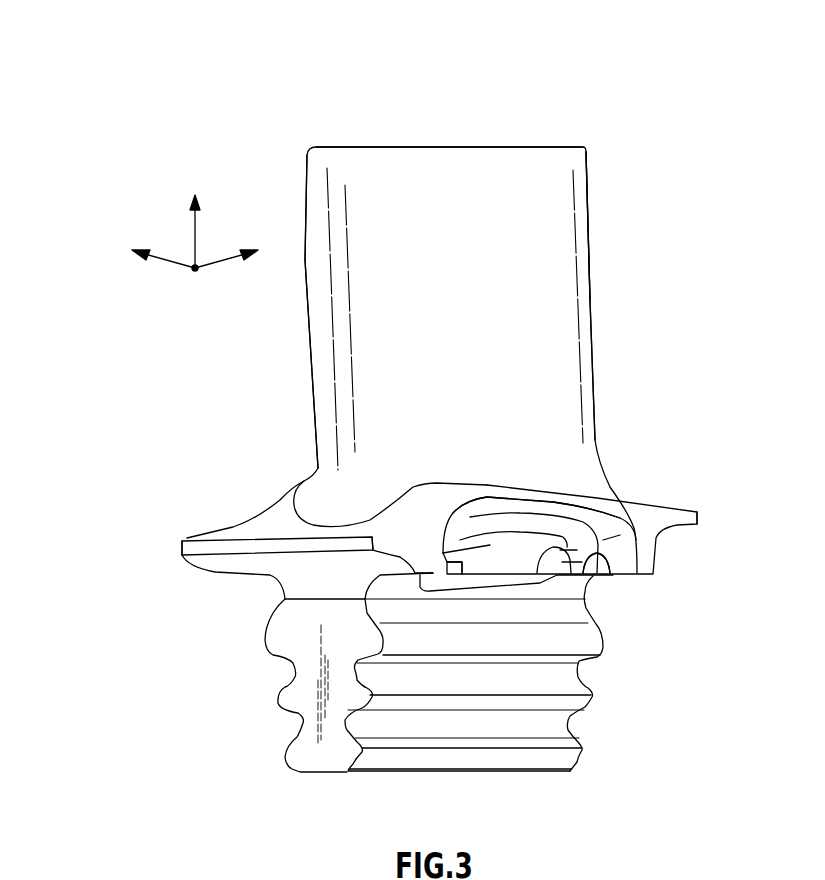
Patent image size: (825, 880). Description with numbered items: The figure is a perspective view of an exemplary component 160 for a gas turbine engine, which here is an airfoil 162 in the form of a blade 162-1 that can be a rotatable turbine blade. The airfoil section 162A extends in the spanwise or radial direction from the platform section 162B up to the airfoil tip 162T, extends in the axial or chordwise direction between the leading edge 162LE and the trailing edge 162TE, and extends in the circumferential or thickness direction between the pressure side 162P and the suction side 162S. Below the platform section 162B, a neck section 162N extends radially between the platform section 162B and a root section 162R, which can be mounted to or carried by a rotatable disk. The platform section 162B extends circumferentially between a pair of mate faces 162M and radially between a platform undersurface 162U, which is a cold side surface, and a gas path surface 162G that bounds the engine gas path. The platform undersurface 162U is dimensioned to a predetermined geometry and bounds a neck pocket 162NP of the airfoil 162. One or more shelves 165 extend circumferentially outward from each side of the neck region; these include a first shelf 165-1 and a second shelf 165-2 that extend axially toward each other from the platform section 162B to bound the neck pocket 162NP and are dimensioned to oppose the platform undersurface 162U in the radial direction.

The component 160 is at (244, 102).
The airfoil 162 is at (550, 147).
The blade 162-1 is at (471, 360).
The airfoil tip 162T is at (407, 157).
The leading edge 162LE is at (303, 333).
The trailing edge 162TE is at (592, 327).
The suction side 162S is at (557, 198).
The pressure side 162P is at (563, 222).
The airfoil section 162A is at (583, 262).
The gas path surface 162G is at (557, 487).
The platform section 162B is at (267, 530).
The mate faces 162M is at (232, 526).
The platform undersurface 162U is at (576, 508).
The neck pocket 162NP is at (603, 525).
The shelves 165 is at (452, 567).
The first shelf 165-1 is at (454, 568).
The second shelf 165-2 is at (608, 572).
The neck section 162N is at (518, 567).
The root section 162R is at (290, 632).